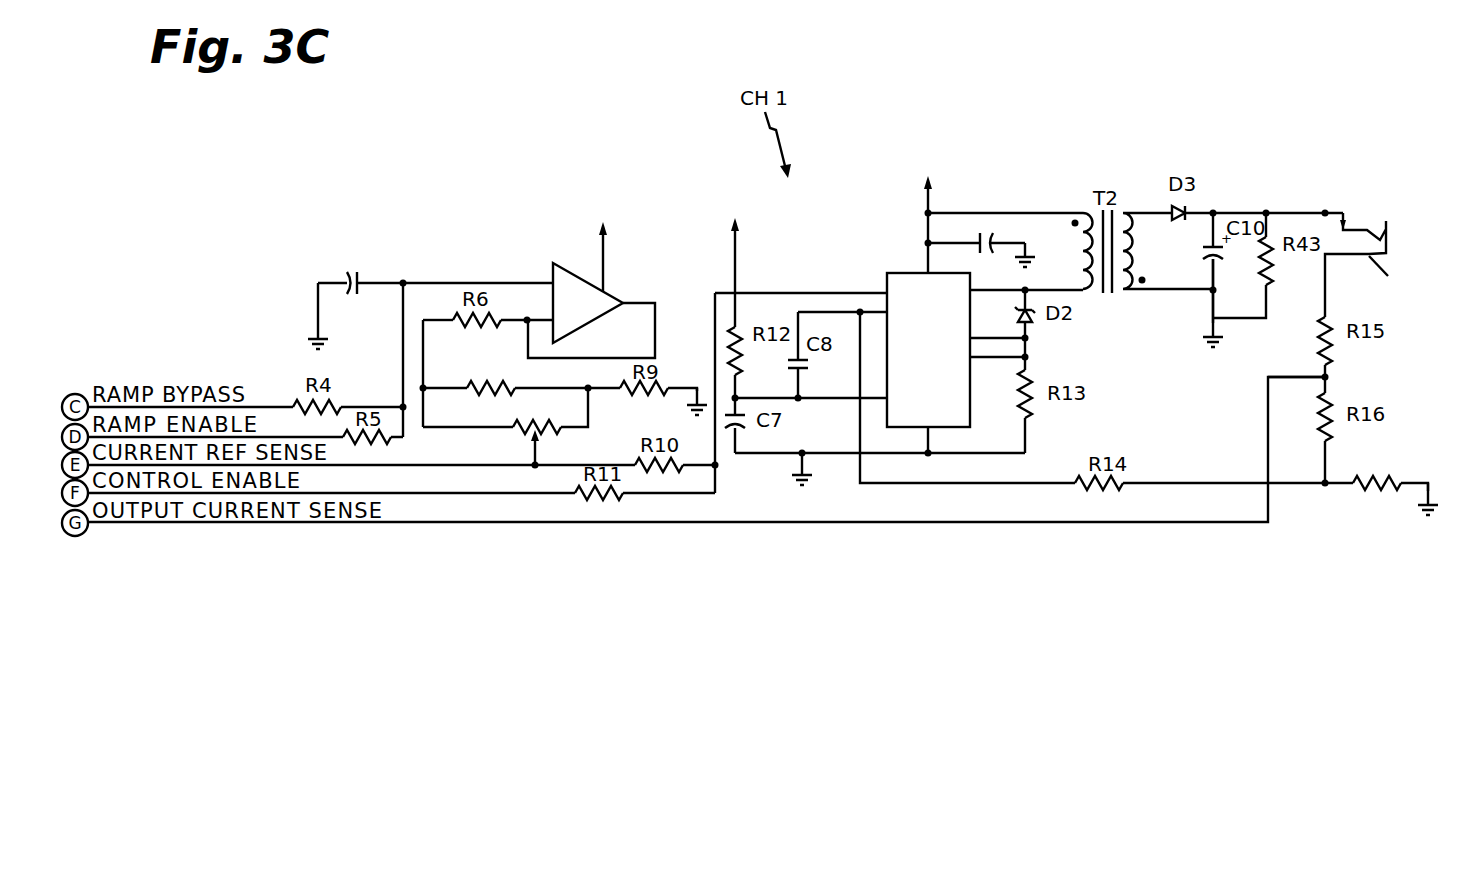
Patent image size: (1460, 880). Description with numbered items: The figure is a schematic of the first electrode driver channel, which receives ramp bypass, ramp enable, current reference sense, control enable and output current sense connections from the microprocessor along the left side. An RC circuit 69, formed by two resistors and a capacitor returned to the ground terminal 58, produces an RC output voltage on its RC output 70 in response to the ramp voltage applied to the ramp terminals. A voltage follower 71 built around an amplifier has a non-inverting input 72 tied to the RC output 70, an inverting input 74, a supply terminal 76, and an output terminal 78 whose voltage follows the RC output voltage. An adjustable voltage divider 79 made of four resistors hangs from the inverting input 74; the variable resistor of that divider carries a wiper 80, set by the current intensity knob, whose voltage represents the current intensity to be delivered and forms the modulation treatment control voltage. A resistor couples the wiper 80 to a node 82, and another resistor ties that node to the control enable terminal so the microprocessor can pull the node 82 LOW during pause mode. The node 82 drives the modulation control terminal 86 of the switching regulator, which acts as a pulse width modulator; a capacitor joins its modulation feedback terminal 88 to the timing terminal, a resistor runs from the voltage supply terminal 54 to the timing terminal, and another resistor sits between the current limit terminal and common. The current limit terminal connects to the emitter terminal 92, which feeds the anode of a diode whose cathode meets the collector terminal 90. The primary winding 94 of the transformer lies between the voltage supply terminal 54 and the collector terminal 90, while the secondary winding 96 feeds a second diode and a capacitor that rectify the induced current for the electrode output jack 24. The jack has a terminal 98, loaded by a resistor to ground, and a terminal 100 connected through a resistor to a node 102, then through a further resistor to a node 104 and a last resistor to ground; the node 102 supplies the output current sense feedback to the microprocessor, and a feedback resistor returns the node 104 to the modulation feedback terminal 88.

The electrode output jack 24 is at (1362, 212).
The voltage supply terminal 54 is at (922, 186).
The ground terminal 58 is at (328, 326).
The RC circuit 69 is at (396, 266).
The RC output 70 is at (412, 279).
The voltage follower 71 is at (695, 236).
The non-inverting input 72 is at (535, 281).
The inverting input 74 is at (526, 318).
The supply terminal 76 is at (616, 284).
The output terminal 78 is at (646, 304).
The adjustable voltage divider 79 is at (445, 375).
The wiper 80 is at (541, 457).
The node 82 is at (720, 468).
The modulation control terminal 86 is at (870, 290).
The modulation feedback terminal 88 is at (878, 311).
The collector terminal 90 is at (989, 233).
The emitter terminal 92 is at (990, 336).
The primary winding 94 is at (1081, 210).
The secondary winding 96 is at (1137, 210).
The terminal 98 is at (1315, 210).
The terminal 100 is at (1395, 280).
The node 102 is at (1338, 377).
The node 104 is at (1326, 490).